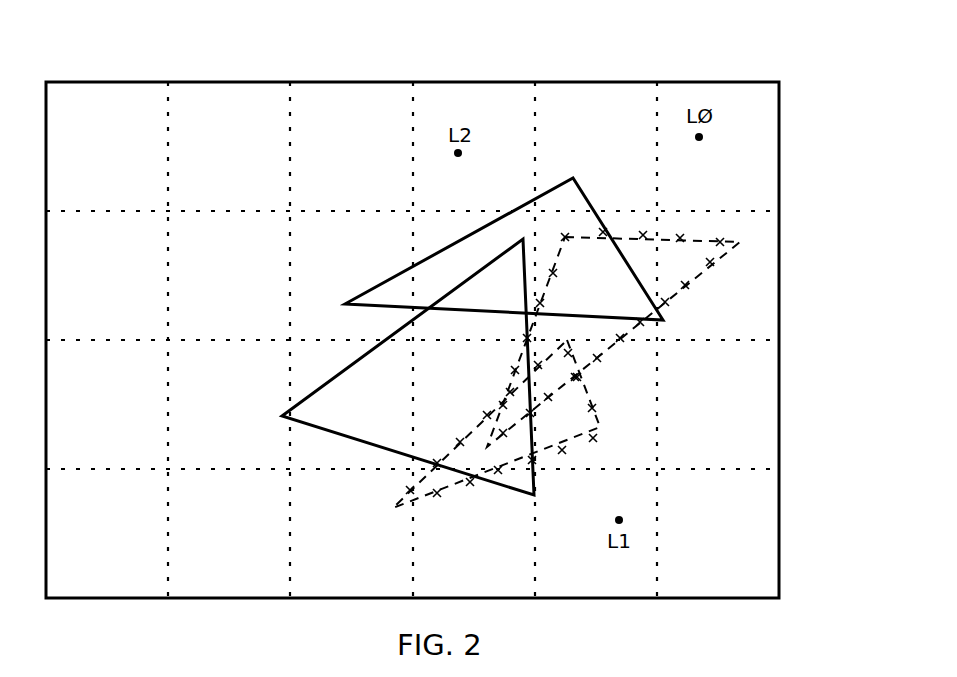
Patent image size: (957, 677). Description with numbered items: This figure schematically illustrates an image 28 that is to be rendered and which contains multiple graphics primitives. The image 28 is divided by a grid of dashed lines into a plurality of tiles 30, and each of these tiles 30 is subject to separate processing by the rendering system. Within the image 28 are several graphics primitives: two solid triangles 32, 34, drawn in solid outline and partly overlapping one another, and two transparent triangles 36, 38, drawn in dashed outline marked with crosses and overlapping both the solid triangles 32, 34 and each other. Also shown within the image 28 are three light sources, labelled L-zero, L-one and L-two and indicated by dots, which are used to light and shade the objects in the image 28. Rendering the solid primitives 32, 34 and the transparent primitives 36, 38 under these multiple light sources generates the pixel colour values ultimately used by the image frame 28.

The image 28 is at (718, 82).
The tiles 30 is at (780, 313).
The solid triangle 32 is at (580, 187).
The solid triangle 34 is at (341, 372).
The transparent triangle 36 is at (713, 221).
The transparent triangle 38 is at (598, 419).